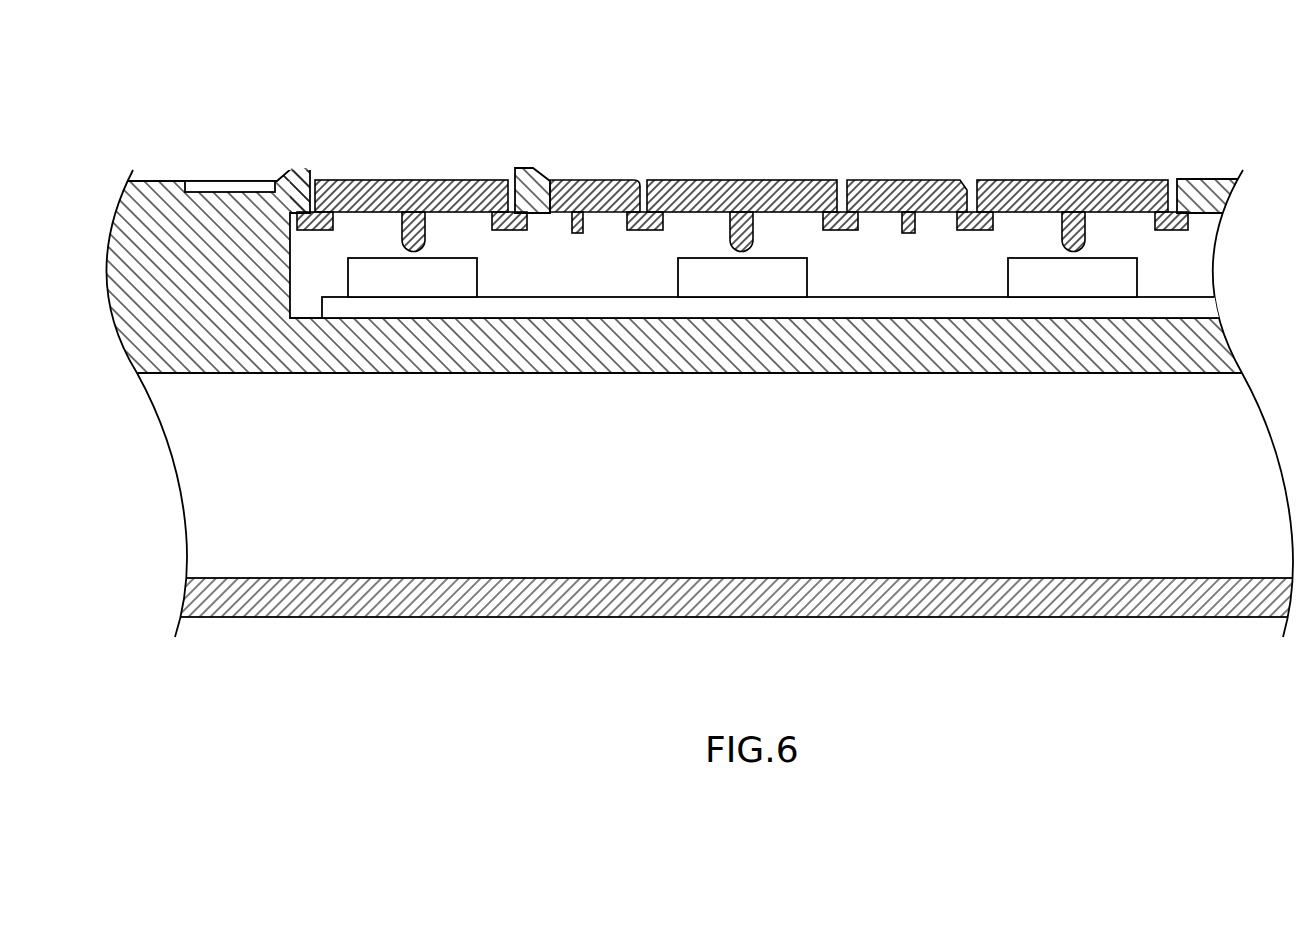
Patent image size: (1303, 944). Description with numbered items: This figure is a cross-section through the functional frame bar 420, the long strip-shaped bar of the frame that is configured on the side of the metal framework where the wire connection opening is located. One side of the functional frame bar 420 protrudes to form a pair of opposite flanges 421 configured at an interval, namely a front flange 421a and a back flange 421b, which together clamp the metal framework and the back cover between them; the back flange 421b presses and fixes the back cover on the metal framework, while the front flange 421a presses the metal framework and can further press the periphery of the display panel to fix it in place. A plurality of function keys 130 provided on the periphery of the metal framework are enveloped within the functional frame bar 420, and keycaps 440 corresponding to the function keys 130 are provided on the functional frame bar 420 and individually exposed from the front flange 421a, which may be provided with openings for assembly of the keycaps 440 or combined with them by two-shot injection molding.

The functional frame bar 420 is at (717, 57).
The flanges 421 is at (167, 174).
The front flange 421a is at (592, 178).
The back flange 421b is at (487, 600).
The keycaps 440 is at (783, 187).
The function keys 130 is at (713, 272).